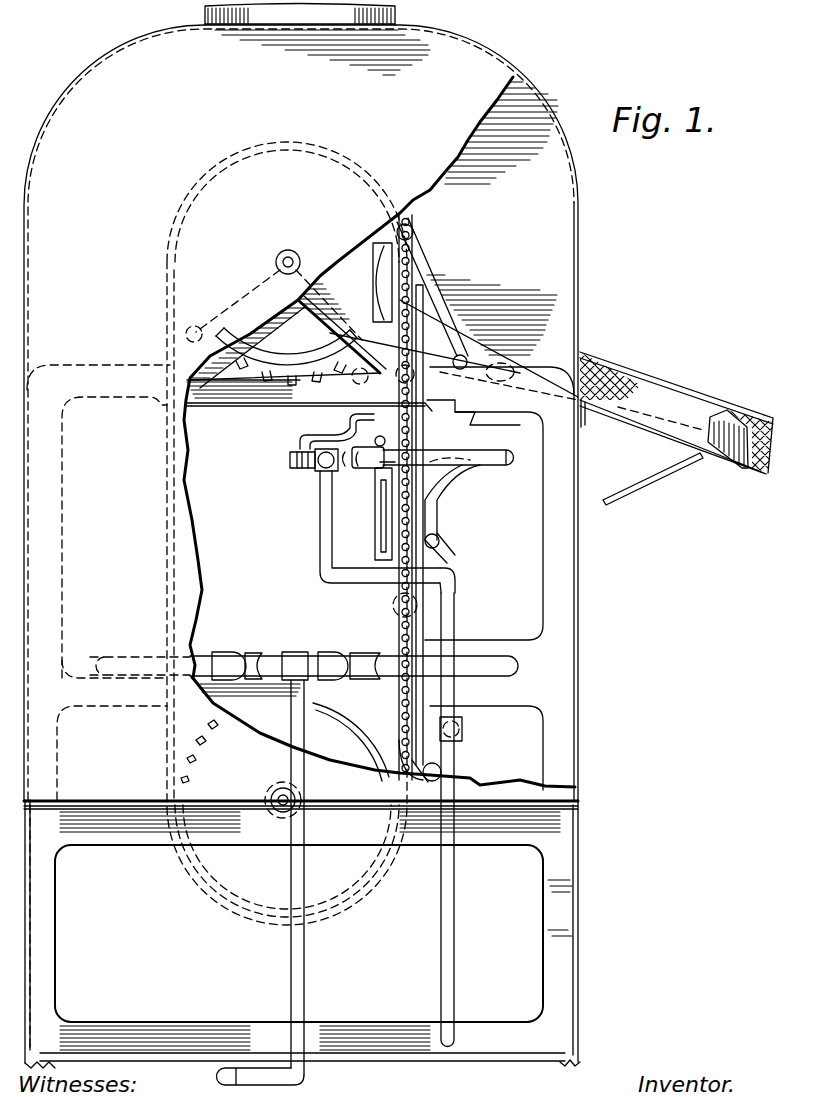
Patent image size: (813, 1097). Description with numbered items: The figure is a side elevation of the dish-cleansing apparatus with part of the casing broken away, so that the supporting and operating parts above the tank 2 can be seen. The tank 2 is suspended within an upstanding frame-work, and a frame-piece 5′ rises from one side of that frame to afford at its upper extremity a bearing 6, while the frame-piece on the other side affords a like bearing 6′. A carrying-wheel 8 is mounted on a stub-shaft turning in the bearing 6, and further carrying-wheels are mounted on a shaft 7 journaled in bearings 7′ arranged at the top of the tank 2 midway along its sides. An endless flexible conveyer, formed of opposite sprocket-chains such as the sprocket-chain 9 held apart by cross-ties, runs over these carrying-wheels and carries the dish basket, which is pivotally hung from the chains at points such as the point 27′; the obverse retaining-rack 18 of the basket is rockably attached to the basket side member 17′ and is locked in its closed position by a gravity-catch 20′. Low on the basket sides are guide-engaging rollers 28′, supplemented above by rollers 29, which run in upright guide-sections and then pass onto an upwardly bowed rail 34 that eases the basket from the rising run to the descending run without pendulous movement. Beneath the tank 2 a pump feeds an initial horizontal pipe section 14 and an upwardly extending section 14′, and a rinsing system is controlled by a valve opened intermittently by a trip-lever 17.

The rail 34 is at (301, 402).
The carrying-wheel 8 is at (260, 380).
The bearing 6 is at (326, 312).
The frame-piece 5′ is at (252, 396).
The sprocket-chain 9 is at (410, 225).
The drive chain 18 is at (390, 404).
The guide-engaging roller 29 is at (423, 624).
The trip-lever 17 is at (322, 445).
The gravity-catch 20′ is at (362, 444).
The curved pipe 27′ is at (480, 470).
The member 17′ is at (380, 566).
The guide-engaging roller 28′ is at (392, 606).
The bearing 6′ is at (324, 718).
The shaft 7 is at (270, 792).
The bearing 7′ is at (271, 800).
The upwardly extending pipe section 14′ is at (300, 960).
The initial horizontal pipe section 14 is at (236, 1080).
The tank 2 is at (360, 1070).